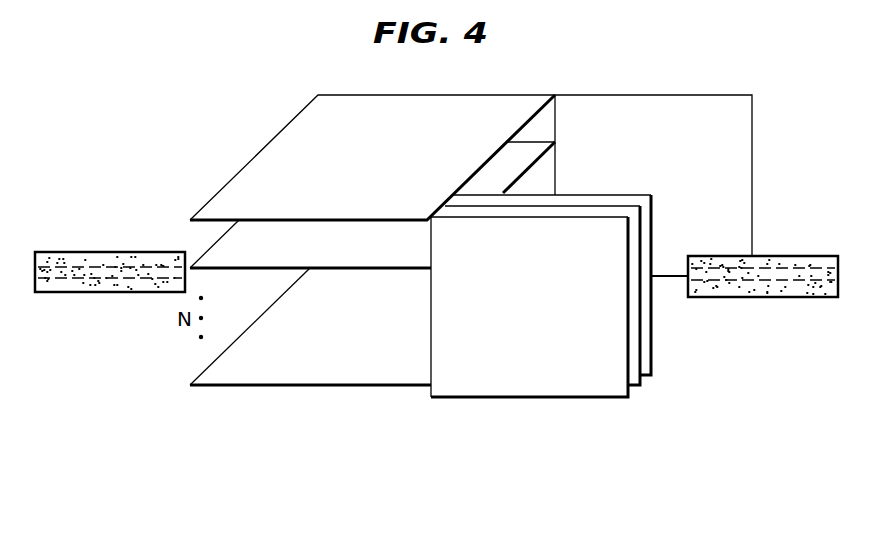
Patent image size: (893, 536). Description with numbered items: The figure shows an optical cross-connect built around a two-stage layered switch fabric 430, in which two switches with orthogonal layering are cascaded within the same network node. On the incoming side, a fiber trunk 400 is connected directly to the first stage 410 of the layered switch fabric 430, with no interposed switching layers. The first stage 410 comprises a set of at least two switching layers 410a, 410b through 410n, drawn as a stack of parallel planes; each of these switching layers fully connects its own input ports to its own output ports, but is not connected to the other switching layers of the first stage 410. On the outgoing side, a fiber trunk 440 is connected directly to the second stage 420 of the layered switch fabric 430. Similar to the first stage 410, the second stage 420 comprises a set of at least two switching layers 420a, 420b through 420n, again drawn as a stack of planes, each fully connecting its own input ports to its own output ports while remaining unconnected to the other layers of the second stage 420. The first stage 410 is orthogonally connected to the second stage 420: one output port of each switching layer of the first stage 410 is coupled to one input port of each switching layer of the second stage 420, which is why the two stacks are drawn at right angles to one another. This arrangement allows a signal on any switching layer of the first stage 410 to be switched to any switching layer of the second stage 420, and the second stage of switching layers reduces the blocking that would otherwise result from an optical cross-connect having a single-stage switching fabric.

The fiber trunk 400 is at (77, 251).
The first stage 410 is at (425, 407).
The switching layer 410a is at (241, 170).
The switching layer 410b is at (210, 246).
The switching layer 410n is at (203, 372).
The second stage 420 is at (628, 410).
The switching layer 420a is at (630, 399).
The switching layer 420b is at (641, 381).
The switching layer 420n is at (652, 348).
The layered switch fabric 430 is at (628, 457).
The fiber trunk 440 is at (791, 256).